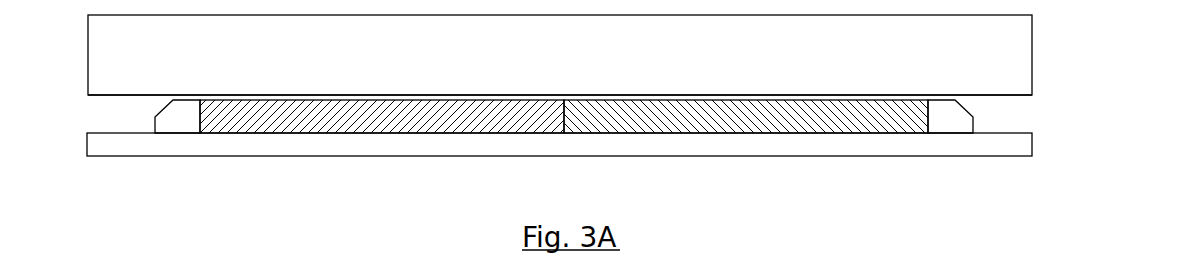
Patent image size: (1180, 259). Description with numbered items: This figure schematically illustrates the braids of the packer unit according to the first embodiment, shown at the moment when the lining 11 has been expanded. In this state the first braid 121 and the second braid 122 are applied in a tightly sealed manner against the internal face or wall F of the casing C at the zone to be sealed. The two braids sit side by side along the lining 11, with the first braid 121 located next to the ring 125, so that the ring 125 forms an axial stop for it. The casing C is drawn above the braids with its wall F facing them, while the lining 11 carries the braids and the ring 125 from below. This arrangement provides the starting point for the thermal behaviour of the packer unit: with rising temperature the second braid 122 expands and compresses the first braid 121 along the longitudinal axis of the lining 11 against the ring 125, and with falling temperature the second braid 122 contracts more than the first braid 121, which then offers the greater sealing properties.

The casing C is at (1025, 33).
The internal face or wall of the casing F is at (1005, 95).
The lining 11 is at (1027, 142).
The first braid 121 is at (744, 120).
The second braid 122 is at (357, 118).
The ring 125 is at (175, 119).